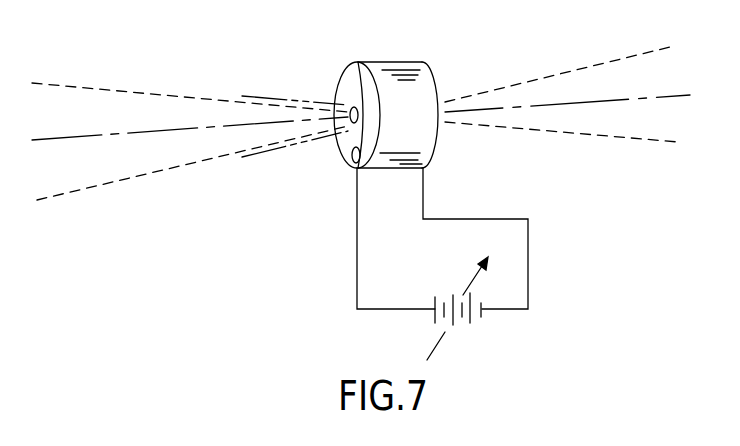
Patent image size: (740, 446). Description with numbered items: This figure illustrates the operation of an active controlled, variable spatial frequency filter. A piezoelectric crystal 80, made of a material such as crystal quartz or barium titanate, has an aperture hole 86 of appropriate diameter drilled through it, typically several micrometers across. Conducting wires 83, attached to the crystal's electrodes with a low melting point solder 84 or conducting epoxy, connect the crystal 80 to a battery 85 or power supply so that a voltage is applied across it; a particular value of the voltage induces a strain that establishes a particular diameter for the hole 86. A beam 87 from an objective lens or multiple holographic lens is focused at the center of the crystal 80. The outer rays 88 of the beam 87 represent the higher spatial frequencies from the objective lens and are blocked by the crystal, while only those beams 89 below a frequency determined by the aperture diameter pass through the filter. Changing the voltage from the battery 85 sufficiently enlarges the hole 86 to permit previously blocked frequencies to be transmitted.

The piezoelectric crystal 80 is at (422, 63).
The conducting wires 83 is at (355, 230).
The low melting point solder 84 is at (347, 162).
The battery 85 is at (471, 319).
The hole 86 is at (353, 63).
The beam 87 is at (82, 88).
The outer rays 88 is at (247, 95).
The beams 89 is at (575, 70).